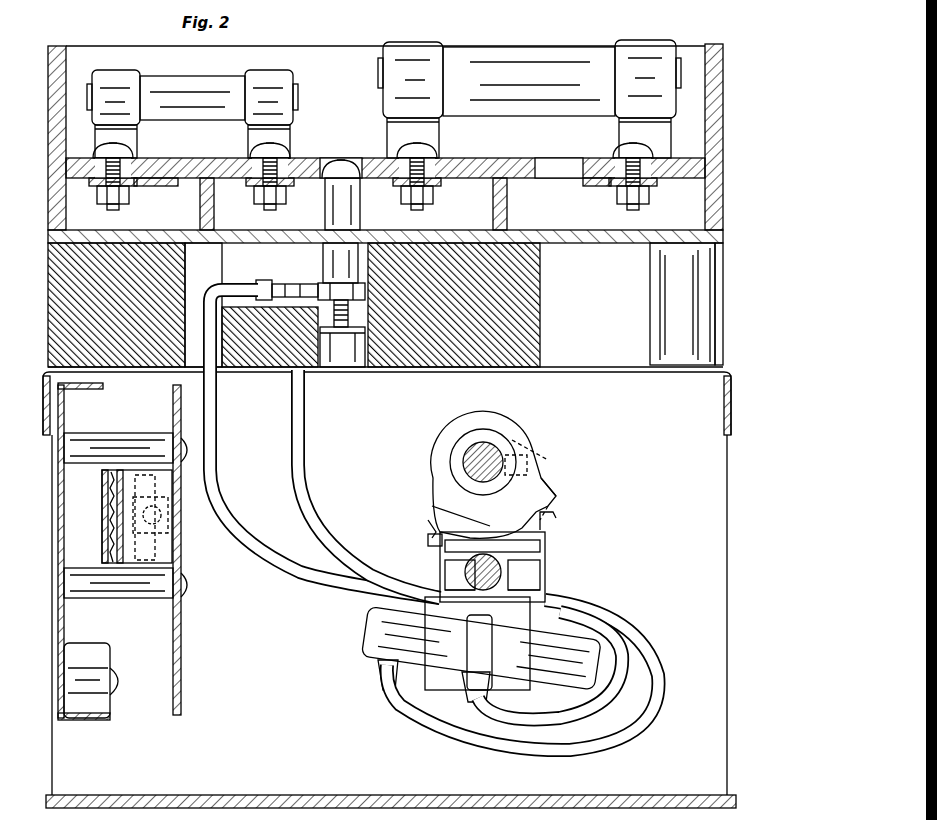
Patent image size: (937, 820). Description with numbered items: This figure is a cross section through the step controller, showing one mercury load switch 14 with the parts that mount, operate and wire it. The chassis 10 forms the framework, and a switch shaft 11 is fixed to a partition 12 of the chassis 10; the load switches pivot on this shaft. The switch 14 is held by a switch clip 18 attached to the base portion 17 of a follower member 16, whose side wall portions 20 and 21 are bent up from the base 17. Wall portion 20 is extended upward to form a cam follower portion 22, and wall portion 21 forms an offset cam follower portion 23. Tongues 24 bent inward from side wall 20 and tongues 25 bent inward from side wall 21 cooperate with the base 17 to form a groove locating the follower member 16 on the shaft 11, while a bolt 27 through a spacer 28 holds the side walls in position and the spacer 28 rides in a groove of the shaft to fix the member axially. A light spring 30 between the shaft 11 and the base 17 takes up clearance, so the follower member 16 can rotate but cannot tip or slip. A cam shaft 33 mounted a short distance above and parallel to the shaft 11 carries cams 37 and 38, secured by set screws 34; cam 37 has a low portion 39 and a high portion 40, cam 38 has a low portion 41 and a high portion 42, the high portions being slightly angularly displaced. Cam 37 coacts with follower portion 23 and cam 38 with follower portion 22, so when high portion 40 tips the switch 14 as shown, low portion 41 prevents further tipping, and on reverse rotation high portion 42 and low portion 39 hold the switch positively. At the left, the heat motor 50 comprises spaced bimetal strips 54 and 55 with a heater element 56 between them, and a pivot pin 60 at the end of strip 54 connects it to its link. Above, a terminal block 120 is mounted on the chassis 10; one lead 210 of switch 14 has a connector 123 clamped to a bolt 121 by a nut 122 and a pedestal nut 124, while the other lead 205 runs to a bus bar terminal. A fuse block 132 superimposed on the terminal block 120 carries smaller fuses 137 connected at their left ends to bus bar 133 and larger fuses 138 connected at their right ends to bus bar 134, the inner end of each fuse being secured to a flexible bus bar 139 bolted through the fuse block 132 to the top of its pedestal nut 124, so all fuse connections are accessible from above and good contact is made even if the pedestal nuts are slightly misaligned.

The chassis 10 is at (540, 797).
The switch shaft 11 is at (475, 552).
The partition 12 is at (710, 620).
The load switch 14 is at (372, 650).
The follower member 16 is at (556, 580).
The base portion 17 is at (520, 618).
The switch clip 18 is at (445, 672).
The side wall portion 20 is at (445, 572).
The side wall portion 21 is at (540, 565).
The cam follower portion 22 is at (428, 520).
The cam follower portion 23 is at (556, 520).
The tongues 24 is at (448, 582).
The tongues 25 is at (540, 585).
The bolt 27 is at (428, 538).
The spacer 28 is at (440, 554).
The light spring 30 is at (458, 600).
The cam shaft 33 is at (488, 455).
The set screws 34 is at (540, 457).
The cam 37 is at (440, 450).
The cam 38 is at (548, 480).
The low portion 39 is at (462, 428).
The high portion 40 is at (440, 500).
The low portion 41 is at (525, 425).
The high portion 42 is at (552, 505).
The heat motor 50 is at (96, 522).
The bimetal strip 54 is at (104, 482).
The bimetal strip 55 is at (110, 500).
The heater element 56 is at (106, 548).
The pivot pin 60 is at (168, 517).
The terminal block 120 is at (70, 315).
The bolt 121 is at (352, 362).
The nut 122 is at (282, 288).
The connector 123 is at (302, 282).
The pedestal nut 124 is at (322, 213).
The fuse block 132 is at (50, 132).
The bus bar 133 is at (160, 188).
The bus bar 134 is at (615, 186).
The smaller fuse 137 is at (190, 84).
The larger fuse 138 is at (565, 105).
The flexible bus bar 139 is at (388, 188).
The lead 205 is at (306, 480).
The lead 210 is at (220, 476).